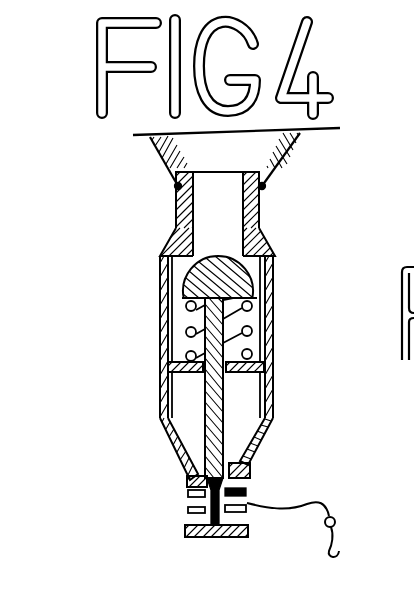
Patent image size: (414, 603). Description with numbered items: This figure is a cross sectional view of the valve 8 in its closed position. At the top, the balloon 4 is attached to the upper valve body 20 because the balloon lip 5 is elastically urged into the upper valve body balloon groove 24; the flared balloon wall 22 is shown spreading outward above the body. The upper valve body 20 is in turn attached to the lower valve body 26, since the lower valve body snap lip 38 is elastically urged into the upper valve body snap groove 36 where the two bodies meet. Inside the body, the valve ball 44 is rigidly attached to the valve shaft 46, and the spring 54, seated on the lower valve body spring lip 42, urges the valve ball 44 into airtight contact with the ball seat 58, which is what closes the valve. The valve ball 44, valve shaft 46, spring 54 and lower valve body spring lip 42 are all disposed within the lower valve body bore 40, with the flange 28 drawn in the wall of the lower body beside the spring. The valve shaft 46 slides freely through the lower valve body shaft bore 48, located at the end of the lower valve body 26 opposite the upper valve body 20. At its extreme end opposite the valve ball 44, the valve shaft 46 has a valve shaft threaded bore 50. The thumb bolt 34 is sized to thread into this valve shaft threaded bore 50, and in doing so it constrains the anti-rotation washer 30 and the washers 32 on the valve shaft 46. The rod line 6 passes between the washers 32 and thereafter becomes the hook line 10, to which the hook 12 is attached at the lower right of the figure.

The valve 8 is at (102, 158).
The balloon 4 is at (152, 146).
The balloon lip 5 is at (178, 187).
The upper valve body balloon groove 24 is at (182, 178).
The funnel wall 22 is at (259, 194).
The upper valve body 20 is at (270, 232).
The upper valve body snap groove 36 is at (250, 242).
The lower valve body snap lip 38 is at (160, 258).
The ball seat 58 is at (168, 289).
The valve ball 44 is at (158, 306).
The spring 54 is at (266, 322).
The flange 28 is at (168, 360).
The lower valve body bore 40 is at (270, 392).
The lower valve body spring lip 42 is at (168, 404).
The valve shaft 46 is at (167, 420).
The valve shaft threaded bore 50 is at (216, 464).
The lower valve body 26 is at (274, 432).
The lower valve body shaft bore 48 is at (247, 467).
The anti-rotation washer 30 is at (247, 485).
The rod line 6 is at (210, 496).
The thumb bolt 34 is at (186, 530).
The washers 32 is at (247, 503).
The hook line 10 is at (320, 503).
The hook 12 is at (342, 549).